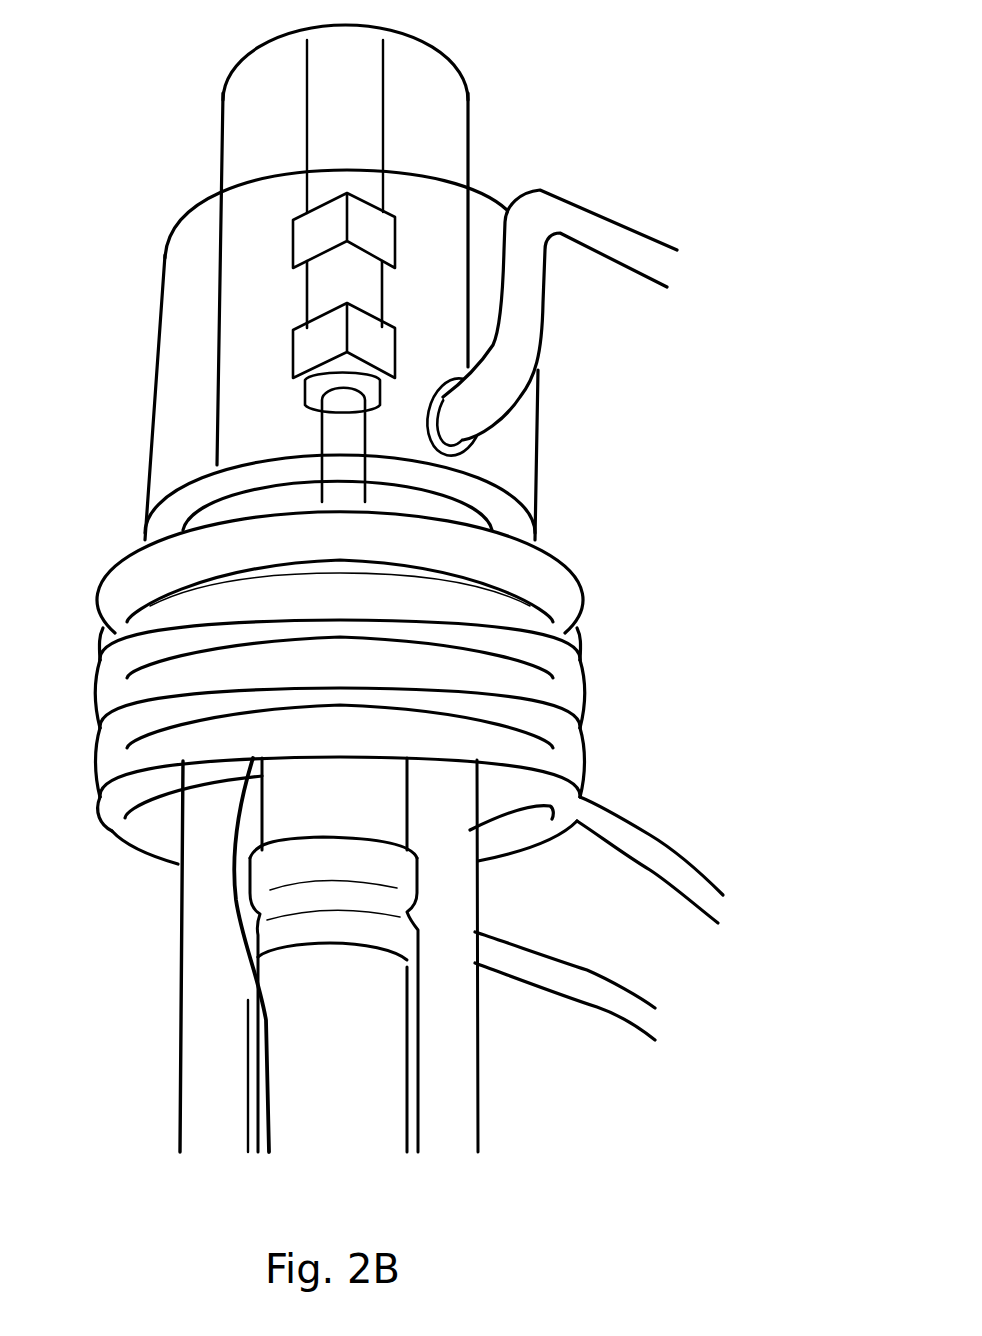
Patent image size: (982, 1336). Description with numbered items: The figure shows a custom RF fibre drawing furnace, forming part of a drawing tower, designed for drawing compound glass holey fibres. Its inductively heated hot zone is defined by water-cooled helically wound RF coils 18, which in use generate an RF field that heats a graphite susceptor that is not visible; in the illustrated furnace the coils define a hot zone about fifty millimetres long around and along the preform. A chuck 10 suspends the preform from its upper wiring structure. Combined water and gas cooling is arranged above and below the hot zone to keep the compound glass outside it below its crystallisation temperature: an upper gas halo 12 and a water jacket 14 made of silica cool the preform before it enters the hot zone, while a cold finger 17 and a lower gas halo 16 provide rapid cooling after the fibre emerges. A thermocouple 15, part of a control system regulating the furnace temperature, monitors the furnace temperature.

The chuck 10 is at (377, 232).
The upper gas halo 12 is at (353, 55).
The water jacket 14 is at (257, 280).
The thermocouple 15 is at (270, 1078).
The lower gas halo 16 is at (337, 882).
The cold finger 17 is at (353, 1042).
The RF coils 18 is at (507, 575).